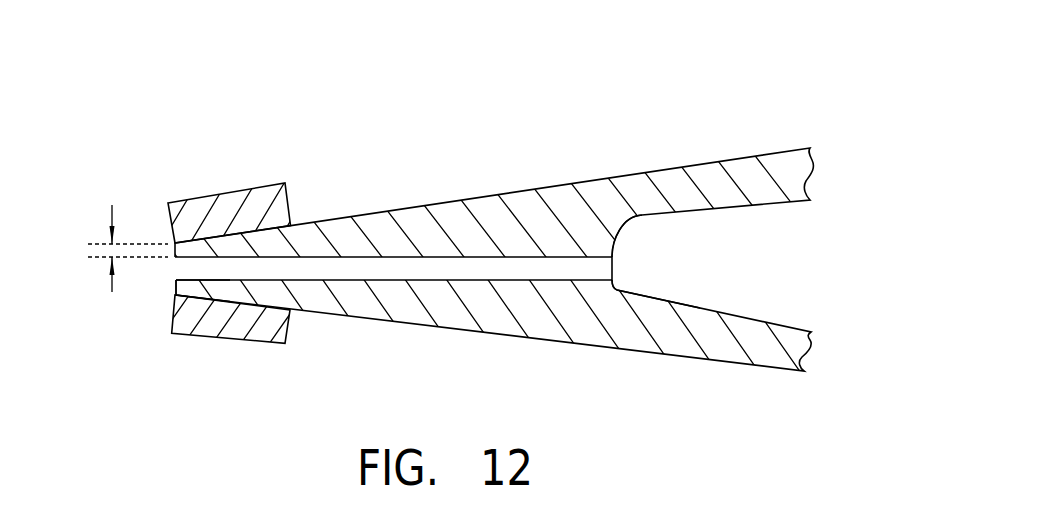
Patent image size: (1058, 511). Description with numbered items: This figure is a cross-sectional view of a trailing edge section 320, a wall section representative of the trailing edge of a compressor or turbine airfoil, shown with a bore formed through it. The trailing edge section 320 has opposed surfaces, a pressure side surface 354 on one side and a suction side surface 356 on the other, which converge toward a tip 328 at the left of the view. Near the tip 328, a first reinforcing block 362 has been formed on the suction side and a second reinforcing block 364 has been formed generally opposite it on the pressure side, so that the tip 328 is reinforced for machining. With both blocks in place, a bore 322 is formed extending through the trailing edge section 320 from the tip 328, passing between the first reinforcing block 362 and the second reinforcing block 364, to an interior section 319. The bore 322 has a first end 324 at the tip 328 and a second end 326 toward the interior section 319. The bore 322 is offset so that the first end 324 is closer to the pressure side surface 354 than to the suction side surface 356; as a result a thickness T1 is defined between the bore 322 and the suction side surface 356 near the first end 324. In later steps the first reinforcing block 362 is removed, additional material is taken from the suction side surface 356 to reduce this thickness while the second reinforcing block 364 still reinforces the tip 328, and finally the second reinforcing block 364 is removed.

The trailing edge section 320 is at (622, 88).
The suction side surface 356 is at (483, 196).
The pressure side surface 354 is at (450, 318).
The first reinforcing block 362 is at (223, 193).
The second reinforcing block 364 is at (238, 341).
The bore 322 is at (612, 267).
The interior section 319 is at (718, 246).
The second end 326 is at (615, 283).
The first end 324 is at (177, 282).
The tip 328 is at (177, 291).
The thickness T1 is at (111, 210).